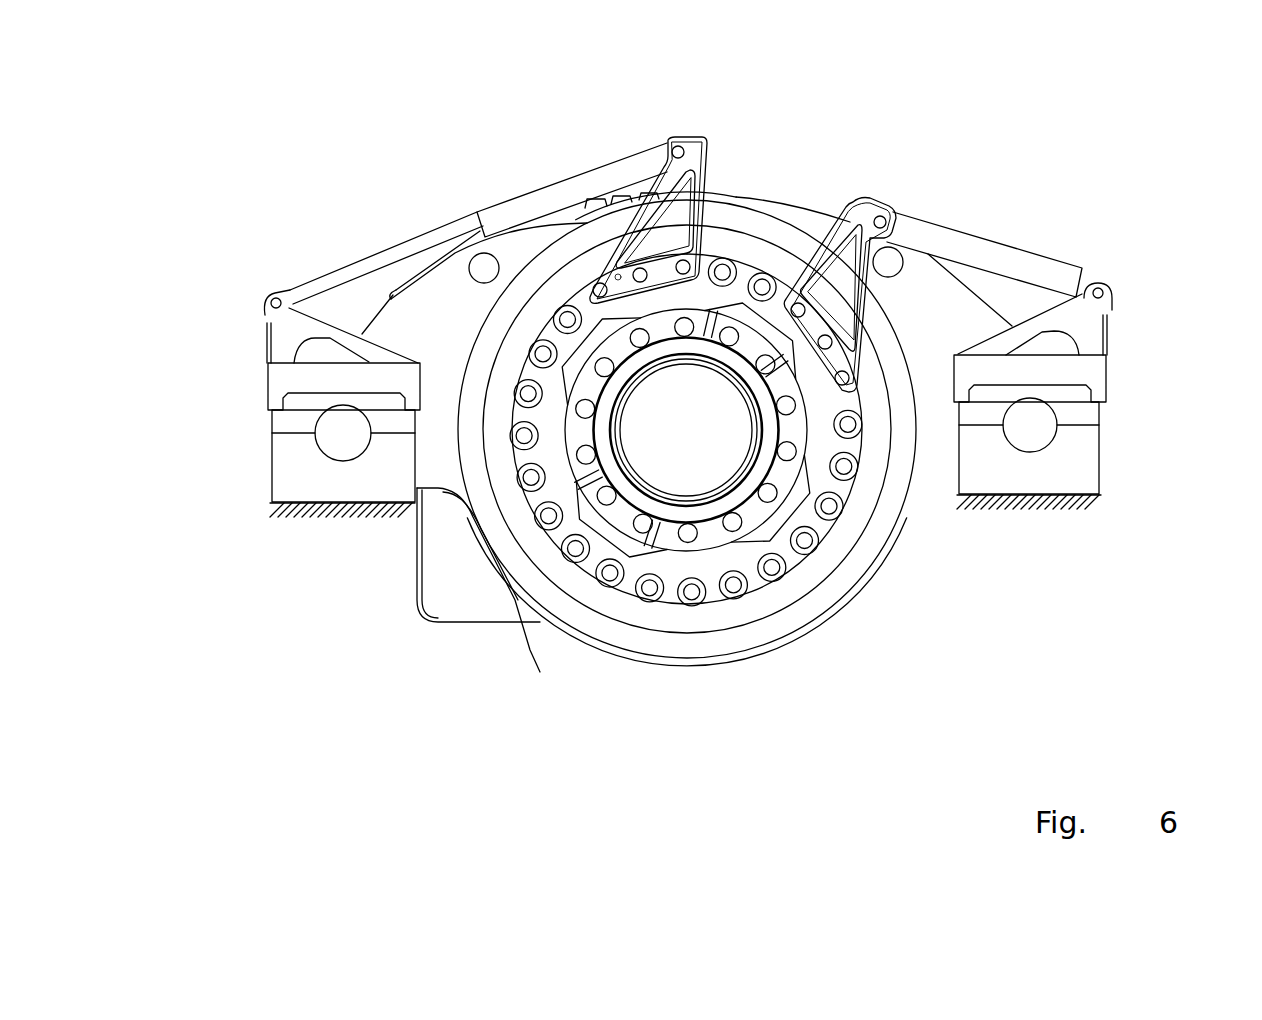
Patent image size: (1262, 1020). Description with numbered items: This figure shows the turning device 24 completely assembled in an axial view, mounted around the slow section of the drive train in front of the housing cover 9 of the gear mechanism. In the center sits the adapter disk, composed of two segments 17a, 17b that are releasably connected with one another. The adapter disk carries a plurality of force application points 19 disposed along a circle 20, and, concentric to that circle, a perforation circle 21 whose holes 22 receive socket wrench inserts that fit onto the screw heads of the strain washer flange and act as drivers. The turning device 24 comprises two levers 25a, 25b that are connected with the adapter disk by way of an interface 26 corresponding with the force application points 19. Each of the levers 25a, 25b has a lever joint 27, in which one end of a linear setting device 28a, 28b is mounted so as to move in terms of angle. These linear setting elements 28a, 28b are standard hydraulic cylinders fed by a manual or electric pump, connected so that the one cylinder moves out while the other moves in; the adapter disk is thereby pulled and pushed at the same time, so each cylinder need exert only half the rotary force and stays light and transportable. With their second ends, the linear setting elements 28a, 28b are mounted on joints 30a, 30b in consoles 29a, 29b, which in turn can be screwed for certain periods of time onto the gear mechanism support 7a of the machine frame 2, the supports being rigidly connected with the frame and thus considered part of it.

The machine frame 2 is at (1063, 505).
The gear mechanism support 7a is at (357, 482).
The housing cover 9 is at (425, 327).
The segment 17a is at (551, 535).
The segment 17b is at (757, 580).
The force application points 19 is at (830, 502).
The circle 20 is at (544, 503).
The perforation circle 21 is at (740, 510).
The holes 22 is at (690, 532).
The turning device 24 is at (924, 102).
The lever 25a is at (666, 185).
The lever 25b is at (838, 285).
The interface 26 is at (618, 277).
The lever joint 27 is at (684, 152).
The linear setting device 28a is at (440, 240).
The linear setting device 28b is at (1050, 276).
The console 29a is at (285, 335).
The console 29b is at (1087, 370).
The joint 30a is at (268, 300).
The joint 30b is at (1114, 295).